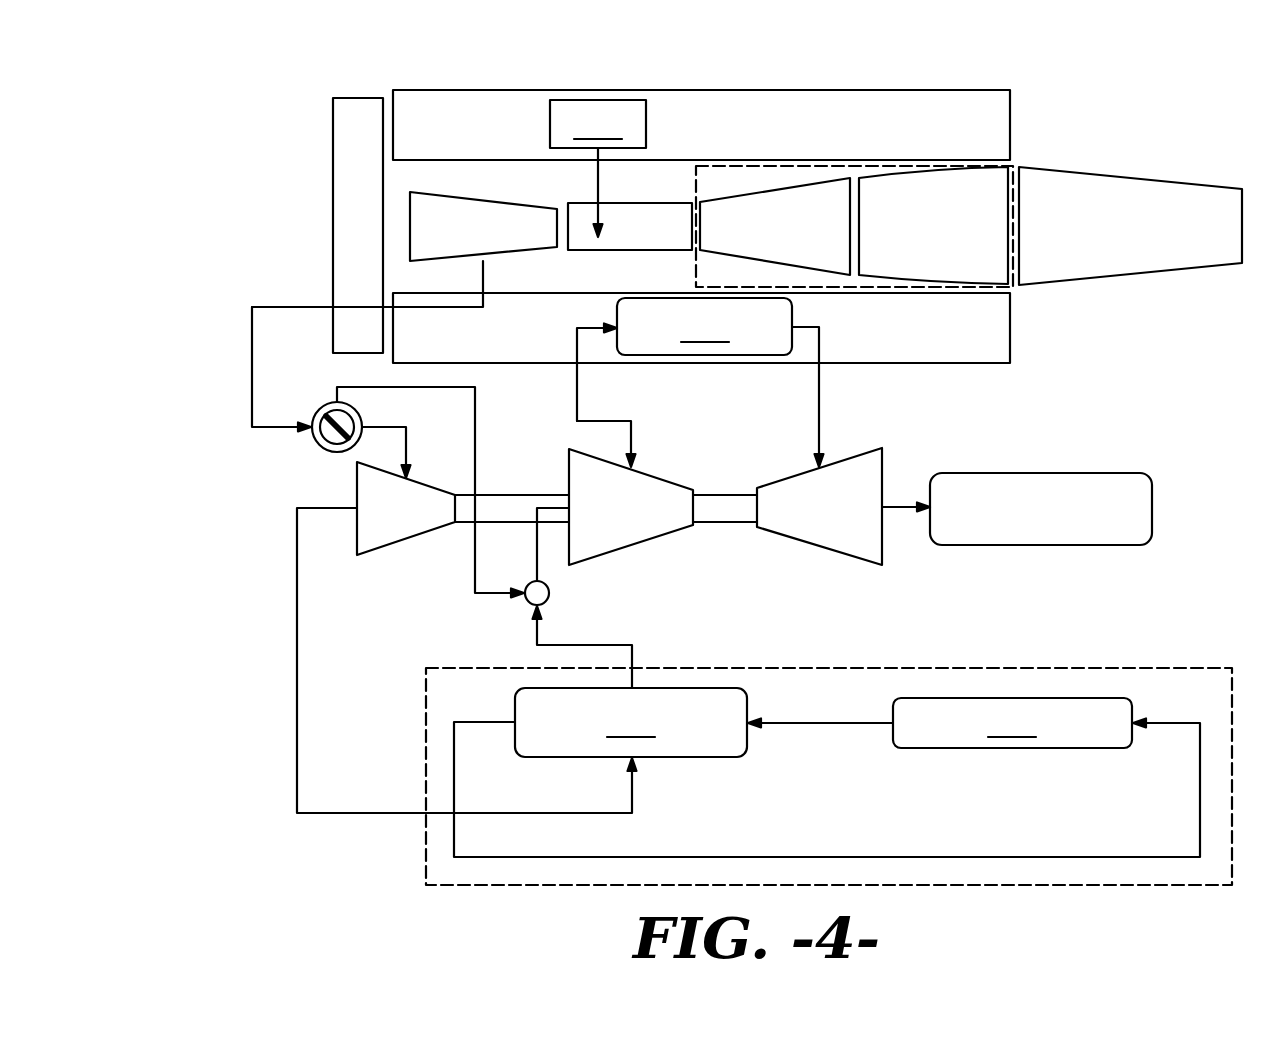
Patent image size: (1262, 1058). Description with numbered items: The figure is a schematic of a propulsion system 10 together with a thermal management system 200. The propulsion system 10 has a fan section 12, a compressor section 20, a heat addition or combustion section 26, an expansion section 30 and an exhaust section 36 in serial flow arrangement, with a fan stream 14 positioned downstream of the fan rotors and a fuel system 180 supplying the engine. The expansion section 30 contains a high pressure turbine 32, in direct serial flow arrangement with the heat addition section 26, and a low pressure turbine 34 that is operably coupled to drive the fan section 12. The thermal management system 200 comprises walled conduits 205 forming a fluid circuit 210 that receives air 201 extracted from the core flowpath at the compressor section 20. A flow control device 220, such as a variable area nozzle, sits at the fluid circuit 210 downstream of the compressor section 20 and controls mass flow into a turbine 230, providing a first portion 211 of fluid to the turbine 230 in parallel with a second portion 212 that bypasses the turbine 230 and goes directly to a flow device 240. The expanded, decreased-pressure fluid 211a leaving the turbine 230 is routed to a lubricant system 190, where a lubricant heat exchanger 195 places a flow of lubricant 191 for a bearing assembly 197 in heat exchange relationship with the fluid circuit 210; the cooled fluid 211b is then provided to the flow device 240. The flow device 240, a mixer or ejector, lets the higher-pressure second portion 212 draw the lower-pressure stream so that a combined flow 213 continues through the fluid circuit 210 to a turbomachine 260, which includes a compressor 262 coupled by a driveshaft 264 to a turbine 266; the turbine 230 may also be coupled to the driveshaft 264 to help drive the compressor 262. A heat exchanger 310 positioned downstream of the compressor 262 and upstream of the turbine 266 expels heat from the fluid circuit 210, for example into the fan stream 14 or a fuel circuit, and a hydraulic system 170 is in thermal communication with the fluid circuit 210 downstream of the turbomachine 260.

The propulsion system 10 is at (1062, 117).
The fan section 12 is at (353, 96).
The fan stream 14 is at (655, 90).
The compressor section 20 is at (497, 196).
The heat addition section 26 is at (618, 203).
The expansion section 30 is at (965, 287).
The high pressure turbine 32 is at (774, 238).
The low pressure turbine 34 is at (919, 238).
The exhaust section 36 is at (1125, 175).
The hydraulic system 170 is at (1046, 468).
The fuel system 180 is at (598, 168).
The lubricant system 190 is at (997, 668).
The lubricant 191 is at (835, 725).
The lubricant heat exchanger 195 is at (631, 722).
The bearing assembly 197 is at (1012, 723).
The thermal management system 200 is at (288, 284).
The air 201 is at (252, 328).
The walled conduit 205 is at (233, 378).
The fluid circuit 210 is at (483, 267).
The first portion of fluid 211 is at (398, 426).
The expanded decreased-pressure fluid 211a is at (300, 697).
The fluid after lubricant system 211b is at (613, 640).
The second portion of fluid 212 is at (475, 460).
The combined flow of fluid 213 is at (530, 525).
The flow control device 220 is at (325, 448).
The turbine 230 is at (377, 550).
The flow device 240 is at (549, 595).
The turbomachine 260 is at (701, 453).
The compressor 262 is at (652, 542).
The driveshaft 264 is at (730, 523).
The turbine 266 is at (842, 558).
The heat exchanger 310 is at (704, 326).